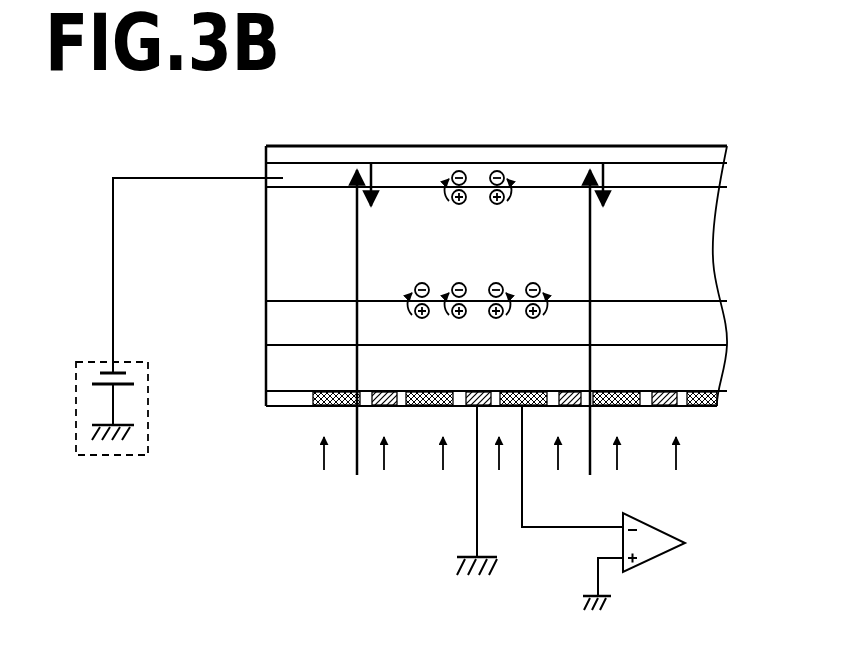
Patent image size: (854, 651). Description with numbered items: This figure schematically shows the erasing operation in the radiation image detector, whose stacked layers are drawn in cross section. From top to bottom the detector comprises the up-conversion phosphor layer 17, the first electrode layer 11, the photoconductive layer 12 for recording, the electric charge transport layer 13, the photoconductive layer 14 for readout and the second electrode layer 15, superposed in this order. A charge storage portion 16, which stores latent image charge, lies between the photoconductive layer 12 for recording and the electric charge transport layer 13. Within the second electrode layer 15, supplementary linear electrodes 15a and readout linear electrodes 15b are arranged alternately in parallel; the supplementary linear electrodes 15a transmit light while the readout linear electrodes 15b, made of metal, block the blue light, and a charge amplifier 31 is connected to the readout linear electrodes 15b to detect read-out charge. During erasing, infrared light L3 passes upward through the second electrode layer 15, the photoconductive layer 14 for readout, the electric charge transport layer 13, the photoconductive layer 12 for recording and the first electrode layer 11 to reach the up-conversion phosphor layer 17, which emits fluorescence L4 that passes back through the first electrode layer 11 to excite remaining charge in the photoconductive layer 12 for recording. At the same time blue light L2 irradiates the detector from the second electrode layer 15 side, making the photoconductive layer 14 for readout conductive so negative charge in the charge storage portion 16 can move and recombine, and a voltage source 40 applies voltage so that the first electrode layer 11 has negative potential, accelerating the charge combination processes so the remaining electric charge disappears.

The first electrode layer 11 is at (283, 172).
The photoconductive layer for recording 12 is at (278, 238).
The electric charge transport layer 13 is at (283, 328).
The photoconductive layer for readout 14 is at (281, 372).
The second electrode layer 15 is at (450, 380).
The supplementary linear electrode 15a is at (672, 392).
The readout linear electrode 15b is at (628, 392).
The charge storage portion 16 is at (298, 294).
The up-conversion phosphor layer 17 is at (282, 155).
The charge amplifier 31 is at (655, 523).
The voltage source 40 is at (86, 456).
The blue light L2 is at (677, 453).
The infrared light L3 is at (492, 322).
The fluorescence L4 is at (605, 178).